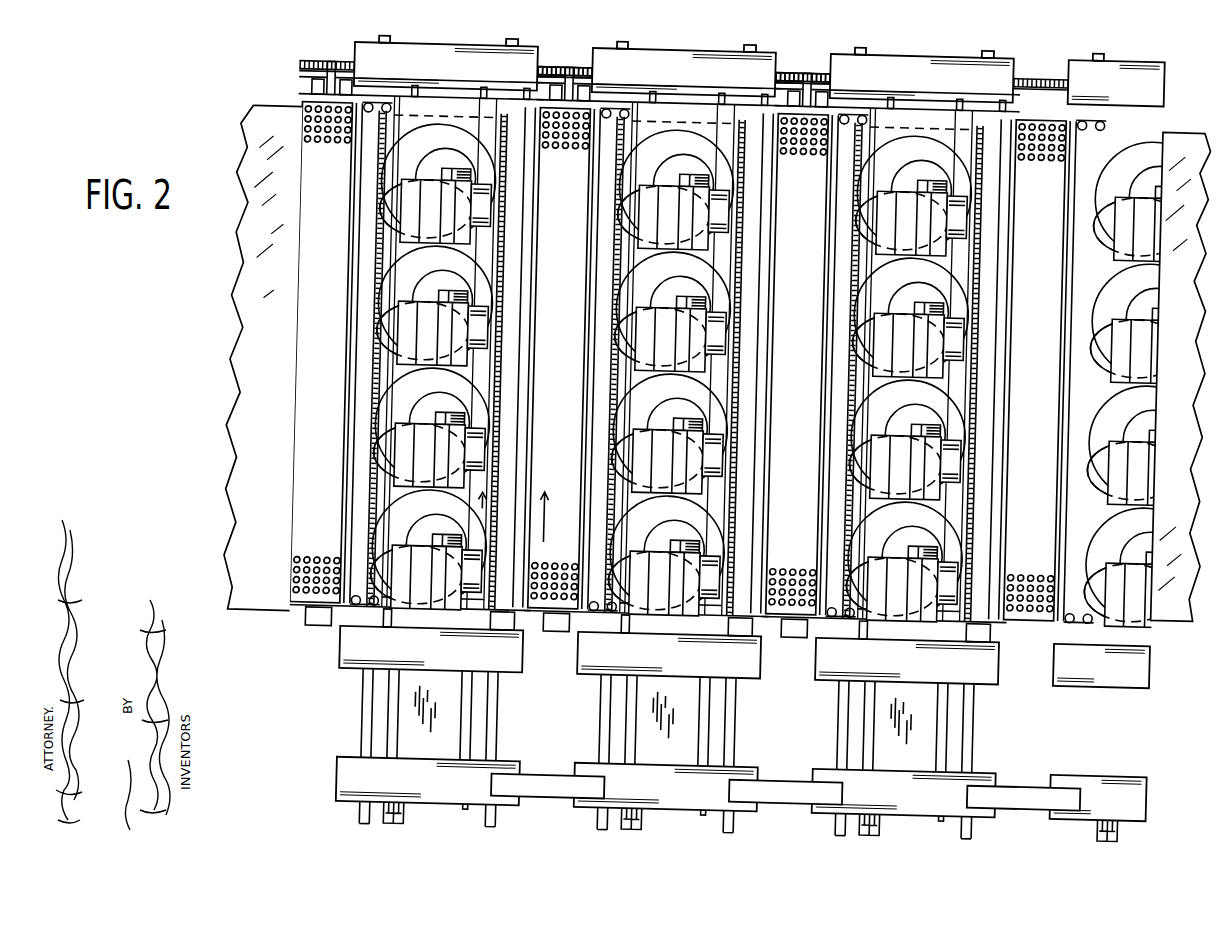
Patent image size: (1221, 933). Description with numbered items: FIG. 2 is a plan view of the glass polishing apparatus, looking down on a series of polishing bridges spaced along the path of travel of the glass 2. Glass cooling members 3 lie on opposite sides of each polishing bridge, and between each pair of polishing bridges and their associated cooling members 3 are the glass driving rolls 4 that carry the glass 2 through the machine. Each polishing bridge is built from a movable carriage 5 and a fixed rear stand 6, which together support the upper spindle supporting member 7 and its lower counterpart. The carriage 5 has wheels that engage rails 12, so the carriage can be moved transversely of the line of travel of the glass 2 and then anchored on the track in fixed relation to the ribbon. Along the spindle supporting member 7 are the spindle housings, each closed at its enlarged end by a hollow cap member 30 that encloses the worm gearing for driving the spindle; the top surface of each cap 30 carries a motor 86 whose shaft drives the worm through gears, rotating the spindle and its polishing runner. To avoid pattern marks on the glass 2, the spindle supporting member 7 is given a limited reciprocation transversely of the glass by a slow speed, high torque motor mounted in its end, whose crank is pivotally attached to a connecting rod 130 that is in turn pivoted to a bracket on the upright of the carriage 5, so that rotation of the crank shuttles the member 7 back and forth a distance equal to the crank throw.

The glass 2 is at (242, 333).
The glass cooling members 3 is at (357, 373).
The glass driving rolls 4 is at (304, 271).
The movable carriage 5 is at (1118, 778).
The fixed rear stand 6 is at (1122, 75).
The upper spindle supporting member 7 is at (1109, 679).
The rails 12 is at (513, 506).
The hollow cap member 30 is at (454, 150).
The motor 86 is at (410, 220).
The connecting rod 130 is at (1138, 815).